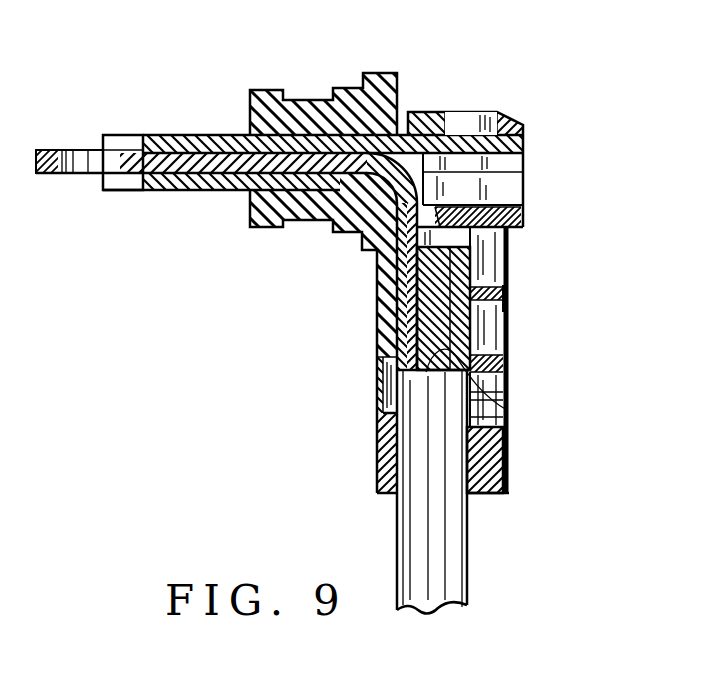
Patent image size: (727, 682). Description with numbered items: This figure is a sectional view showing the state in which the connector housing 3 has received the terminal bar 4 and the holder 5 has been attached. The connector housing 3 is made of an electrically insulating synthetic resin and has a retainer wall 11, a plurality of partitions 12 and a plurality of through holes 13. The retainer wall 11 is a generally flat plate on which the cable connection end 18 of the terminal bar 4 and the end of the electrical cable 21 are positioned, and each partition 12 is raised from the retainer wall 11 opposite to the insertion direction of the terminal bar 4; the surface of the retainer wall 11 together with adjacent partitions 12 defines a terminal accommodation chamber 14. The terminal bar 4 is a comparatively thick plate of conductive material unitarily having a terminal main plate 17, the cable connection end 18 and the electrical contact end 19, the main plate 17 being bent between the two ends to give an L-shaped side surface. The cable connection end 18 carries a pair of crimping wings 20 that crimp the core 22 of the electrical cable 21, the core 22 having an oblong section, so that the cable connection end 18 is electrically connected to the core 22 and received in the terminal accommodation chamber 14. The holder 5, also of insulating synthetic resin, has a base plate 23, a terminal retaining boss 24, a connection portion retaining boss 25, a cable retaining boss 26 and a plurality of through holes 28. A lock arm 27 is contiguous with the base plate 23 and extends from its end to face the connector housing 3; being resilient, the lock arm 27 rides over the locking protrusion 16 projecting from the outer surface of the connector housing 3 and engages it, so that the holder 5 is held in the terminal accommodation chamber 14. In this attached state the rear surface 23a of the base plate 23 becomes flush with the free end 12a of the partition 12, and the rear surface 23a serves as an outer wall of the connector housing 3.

The connector housing 3 is at (217, 133).
The terminal bar 4 is at (367, 250).
The holder 5 is at (525, 160).
The retainer wall 11 is at (373, 352).
The partition 12 is at (375, 338).
The free end of partition 12a is at (509, 303).
The through hole 13 is at (340, 160).
The terminal accommodation chamber 14 is at (472, 283).
The locking protrusion 16 is at (443, 115).
The terminal main plate 17 is at (390, 184).
The cable connection end 18 is at (373, 378).
The electrical contact end 19 is at (200, 192).
The crimping wings 20 is at (503, 417).
The electrical cable 21 is at (468, 574).
The core 22 is at (426, 372).
The base plate 23 is at (507, 258).
The rear surface of base plate 23a is at (509, 293).
The terminal retaining boss 24 is at (525, 162).
The connection portion retaining boss 25 is at (507, 313).
The cable retaining boss 26 is at (503, 463).
The lock arm 27 is at (467, 112).
The through hole 28 is at (500, 215).